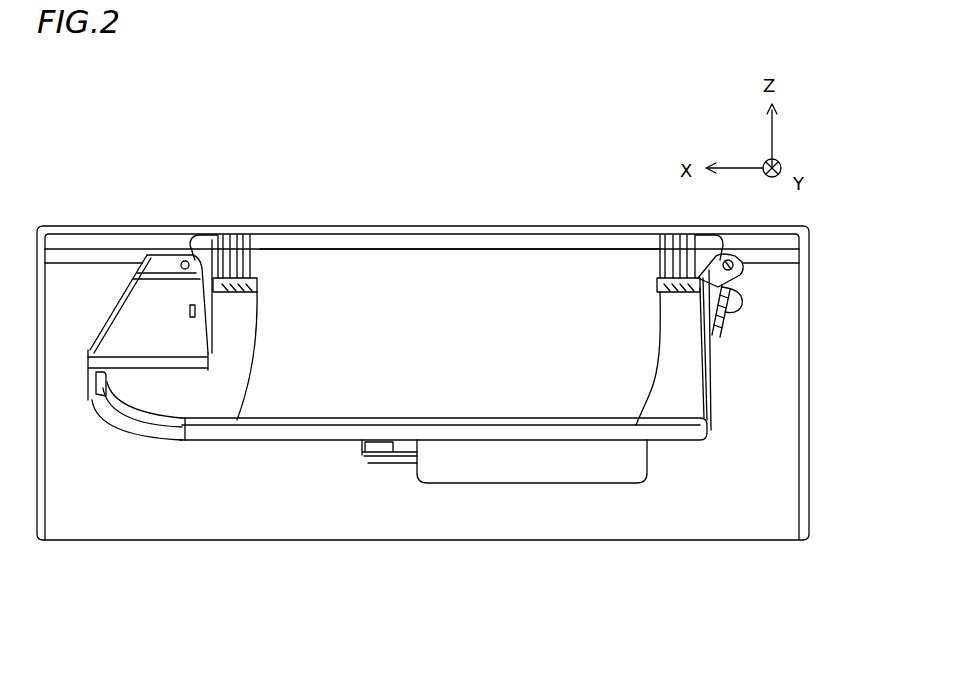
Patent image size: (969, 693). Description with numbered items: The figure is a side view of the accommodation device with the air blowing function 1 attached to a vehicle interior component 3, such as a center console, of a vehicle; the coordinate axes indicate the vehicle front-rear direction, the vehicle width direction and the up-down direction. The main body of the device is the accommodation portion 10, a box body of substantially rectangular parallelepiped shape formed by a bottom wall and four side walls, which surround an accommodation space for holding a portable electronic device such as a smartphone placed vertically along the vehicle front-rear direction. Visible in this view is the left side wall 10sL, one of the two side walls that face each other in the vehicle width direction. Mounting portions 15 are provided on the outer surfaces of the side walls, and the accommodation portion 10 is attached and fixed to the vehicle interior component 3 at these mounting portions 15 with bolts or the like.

The accommodation device with the air blowing function 1 is at (317, 452).
The vehicle interior component 3 is at (72, 233).
The accommodation portion 10 is at (487, 273).
The left side wall 10sL is at (353, 283).
The mounting portion 15 is at (237, 420).